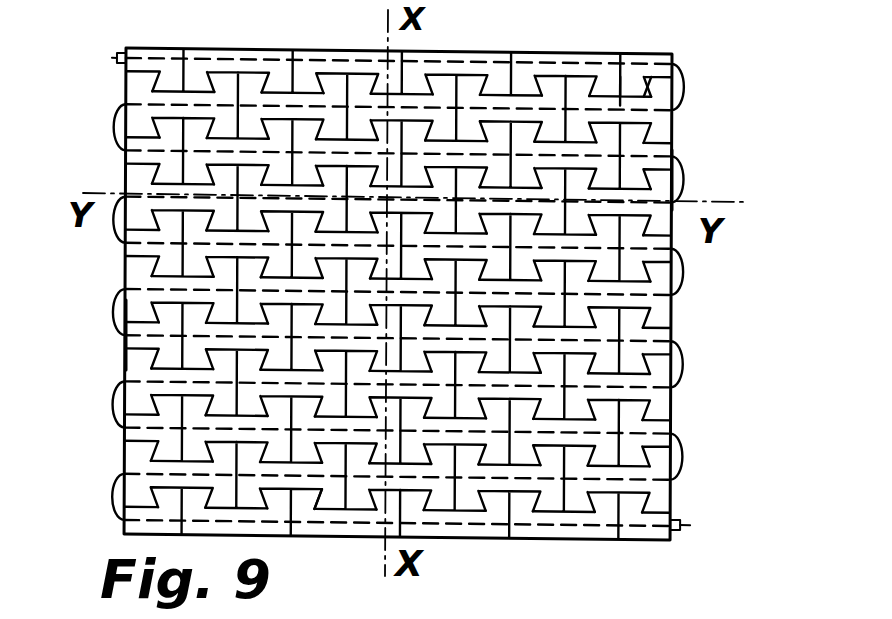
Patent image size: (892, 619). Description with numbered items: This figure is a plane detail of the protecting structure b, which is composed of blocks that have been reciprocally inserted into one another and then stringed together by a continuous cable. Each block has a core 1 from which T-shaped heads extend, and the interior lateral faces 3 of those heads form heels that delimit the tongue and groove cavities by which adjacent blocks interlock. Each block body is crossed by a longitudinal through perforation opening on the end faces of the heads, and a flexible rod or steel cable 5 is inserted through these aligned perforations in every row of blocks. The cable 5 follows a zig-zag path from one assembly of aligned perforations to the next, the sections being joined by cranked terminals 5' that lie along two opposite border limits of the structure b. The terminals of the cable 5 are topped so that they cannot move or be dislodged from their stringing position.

The core of block 1 is at (157, 287).
The interior lateral faces of the heads 3 is at (628, 88).
The perforating block cable 5 is at (420, 288).
The cranked terminals 5' is at (397, 292).
The protecting structure b is at (702, 181).